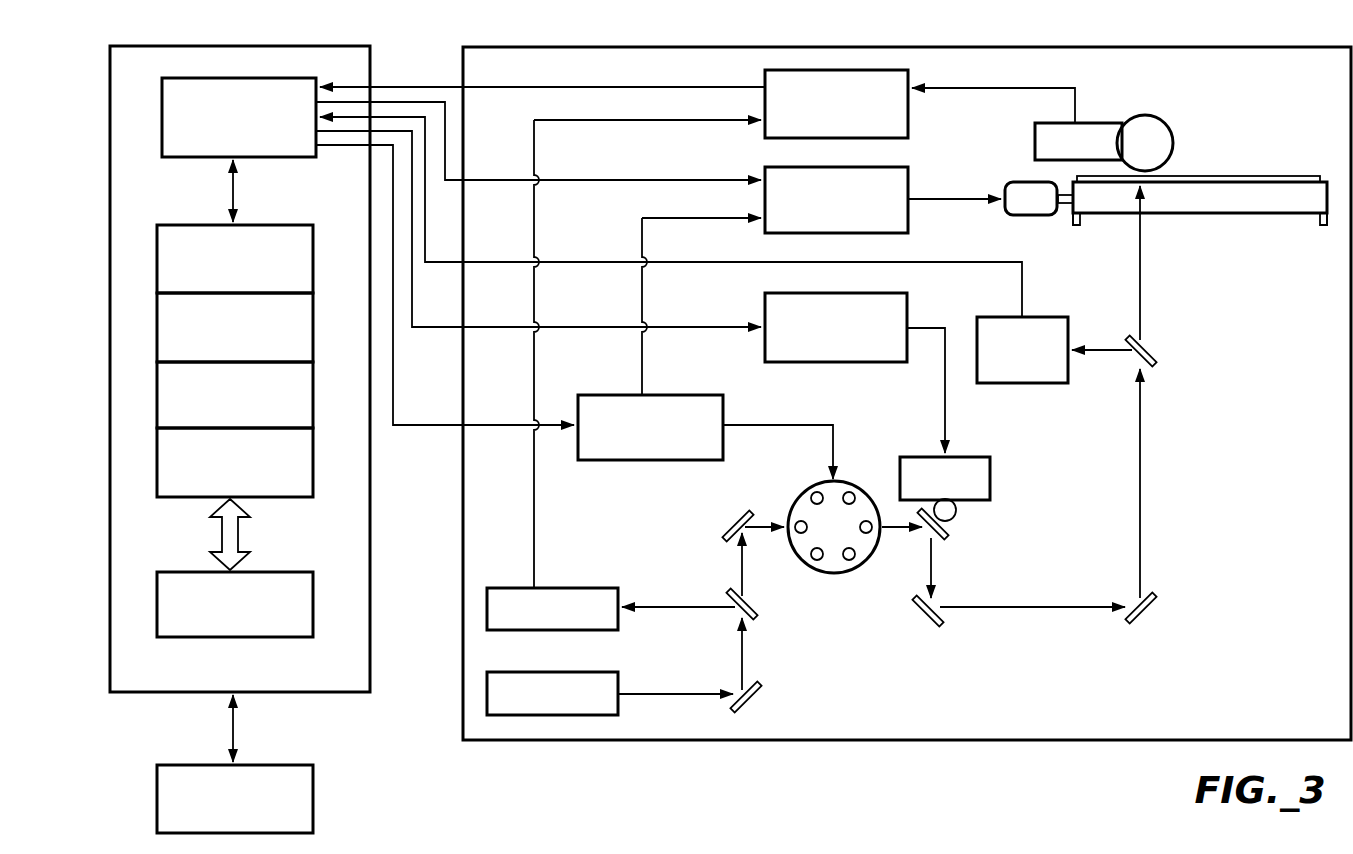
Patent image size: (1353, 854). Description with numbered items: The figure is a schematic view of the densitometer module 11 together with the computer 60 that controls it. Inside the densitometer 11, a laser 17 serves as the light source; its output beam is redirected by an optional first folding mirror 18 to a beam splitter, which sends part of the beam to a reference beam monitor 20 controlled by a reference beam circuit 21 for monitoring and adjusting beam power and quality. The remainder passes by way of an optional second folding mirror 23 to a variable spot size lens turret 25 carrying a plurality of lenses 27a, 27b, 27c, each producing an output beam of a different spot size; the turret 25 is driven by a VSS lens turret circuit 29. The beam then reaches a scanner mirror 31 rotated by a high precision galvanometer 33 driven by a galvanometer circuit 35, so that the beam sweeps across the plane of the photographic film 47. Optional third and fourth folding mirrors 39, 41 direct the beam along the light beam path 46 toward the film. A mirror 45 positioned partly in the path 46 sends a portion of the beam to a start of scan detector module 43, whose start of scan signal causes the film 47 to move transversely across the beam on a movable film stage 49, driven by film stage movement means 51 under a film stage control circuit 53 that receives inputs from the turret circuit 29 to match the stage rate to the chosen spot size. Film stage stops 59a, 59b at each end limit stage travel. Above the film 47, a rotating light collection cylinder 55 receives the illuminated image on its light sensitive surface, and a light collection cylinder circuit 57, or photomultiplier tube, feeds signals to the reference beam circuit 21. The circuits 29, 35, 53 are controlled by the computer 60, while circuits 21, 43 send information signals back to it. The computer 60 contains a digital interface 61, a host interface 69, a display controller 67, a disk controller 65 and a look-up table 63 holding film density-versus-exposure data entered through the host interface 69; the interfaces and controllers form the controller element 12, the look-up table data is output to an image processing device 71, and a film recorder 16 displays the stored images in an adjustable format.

The densitometer module 11 is at (463, 576).
The controller element 12 is at (186, 503).
The film recorder 16 is at (315, 810).
The laser 17 is at (605, 672).
The first folding mirror 18 is at (758, 701).
The reference beam monitor 20 is at (591, 588).
The reference beam circuit 21 is at (880, 70).
The second folding mirror 23 is at (727, 538).
The variable spot size lens turret 25 is at (812, 492).
The lens 27a is at (850, 562).
The lens 27b is at (819, 562).
The lens 27c is at (803, 535).
The VSS lens turret circuit 29 is at (708, 395).
The scanner mirror 31 is at (946, 540).
The galvanometer 33 is at (966, 457).
The galvanometer circuit 35 is at (890, 293).
The third folding mirror 39 is at (939, 626).
The fourth folding mirror 41 is at (1152, 612).
The start of scan detector module 43 is at (1056, 317).
The mirror 45 is at (1157, 366).
The light beam path 46 is at (1140, 495).
The photographic film 47 is at (1190, 176).
The movable film stage 49 is at (1162, 205).
The film stage movement means 51 is at (1014, 182).
The film stage control circuit 53 is at (886, 167).
The light collection cylinder 55 is at (1166, 122).
The light collection cylinder circuit 57 is at (1052, 123).
The film stage stop 59a is at (1078, 225).
The film stage stop 59b is at (1318, 225).
The computer 60 is at (285, 692).
The digital interface 61 is at (163, 104).
The look-up table 63 is at (315, 472).
The disk controller 65 is at (315, 402).
The display controller 67 is at (315, 332).
The host interface 69 is at (315, 230).
The image processing device 71 is at (315, 618).